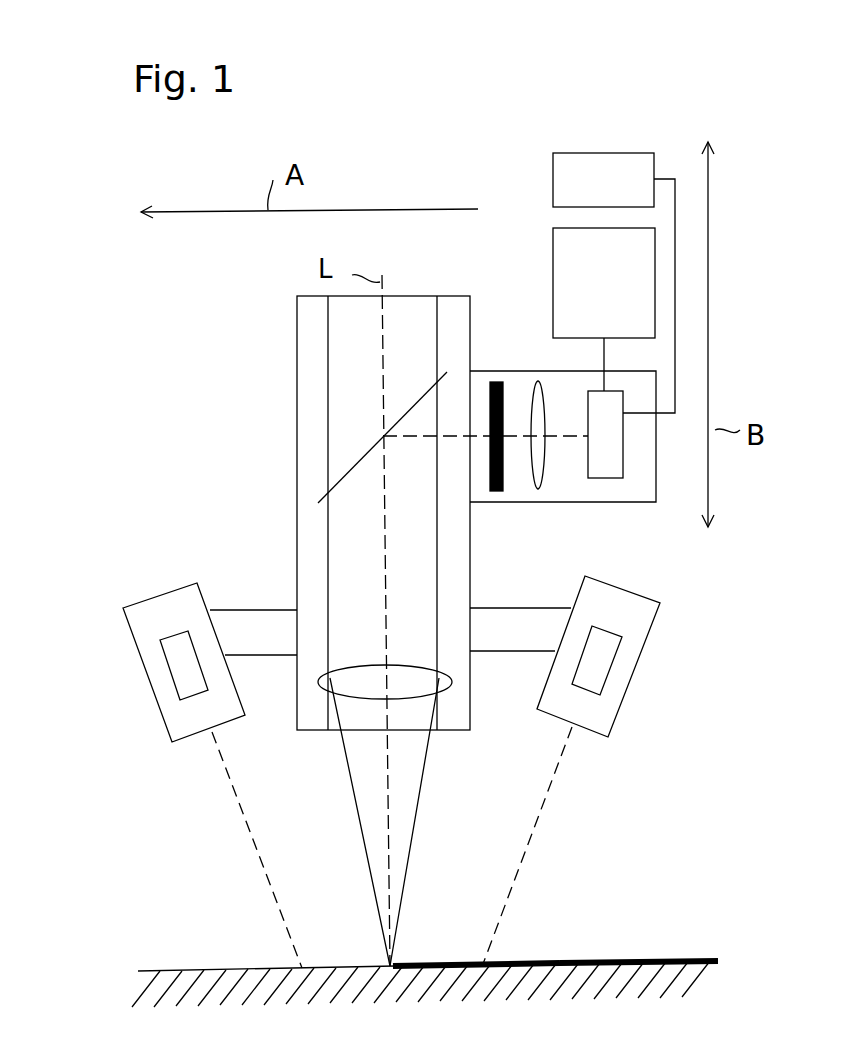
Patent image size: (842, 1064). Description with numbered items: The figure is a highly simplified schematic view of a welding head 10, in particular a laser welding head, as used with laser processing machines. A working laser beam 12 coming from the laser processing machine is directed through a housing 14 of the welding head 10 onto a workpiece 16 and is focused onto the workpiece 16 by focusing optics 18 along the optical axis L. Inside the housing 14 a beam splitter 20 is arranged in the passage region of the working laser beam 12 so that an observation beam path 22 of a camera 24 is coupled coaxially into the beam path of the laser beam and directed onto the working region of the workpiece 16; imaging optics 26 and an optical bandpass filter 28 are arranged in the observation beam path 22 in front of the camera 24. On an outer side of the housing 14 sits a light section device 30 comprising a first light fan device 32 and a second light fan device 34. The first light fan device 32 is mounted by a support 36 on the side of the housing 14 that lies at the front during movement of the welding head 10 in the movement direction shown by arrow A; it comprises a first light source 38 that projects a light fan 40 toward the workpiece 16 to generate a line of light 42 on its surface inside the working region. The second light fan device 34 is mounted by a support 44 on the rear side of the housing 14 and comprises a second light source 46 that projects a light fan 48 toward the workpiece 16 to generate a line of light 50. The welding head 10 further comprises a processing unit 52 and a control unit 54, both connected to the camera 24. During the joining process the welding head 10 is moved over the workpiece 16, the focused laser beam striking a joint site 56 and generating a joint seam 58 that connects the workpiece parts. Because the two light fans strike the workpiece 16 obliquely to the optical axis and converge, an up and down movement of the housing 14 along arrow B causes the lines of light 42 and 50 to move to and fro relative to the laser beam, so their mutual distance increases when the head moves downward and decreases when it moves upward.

The welding head 10 is at (432, 140).
The working laser beam 12 is at (327, 358).
The housing 14 is at (297, 428).
The workpiece 16 is at (213, 970).
The focusing optics 18 is at (443, 687).
The beam splitter 20 is at (340, 477).
The observation beam path 22 is at (453, 438).
The camera 24 is at (615, 465).
The imaging optics 26 is at (543, 473).
The optical bandpass filter 28 is at (486, 385).
The light section device 30 is at (196, 540).
The first light fan device 32 is at (137, 613).
The second light fan device 34 is at (633, 605).
The support 36 is at (246, 610).
The first light source 38 is at (178, 670).
The light fan 40 is at (232, 795).
The line of light 42 is at (302, 968).
The support 44 is at (510, 651).
The second light source 46 is at (600, 655).
The light fan 48 is at (553, 775).
The line of light 50 is at (485, 962).
The processing unit 52 is at (560, 245).
The control unit 54 is at (617, 153).
The joint site 56 is at (394, 964).
The joint seam 58 is at (627, 960).